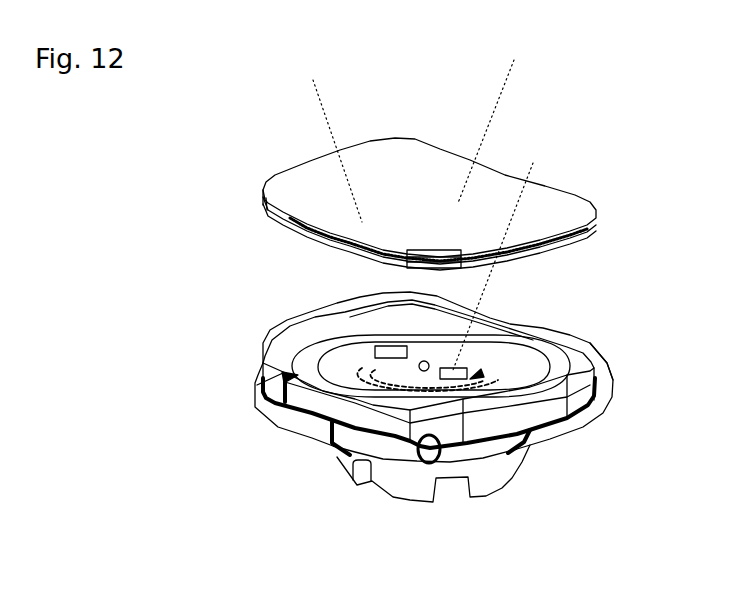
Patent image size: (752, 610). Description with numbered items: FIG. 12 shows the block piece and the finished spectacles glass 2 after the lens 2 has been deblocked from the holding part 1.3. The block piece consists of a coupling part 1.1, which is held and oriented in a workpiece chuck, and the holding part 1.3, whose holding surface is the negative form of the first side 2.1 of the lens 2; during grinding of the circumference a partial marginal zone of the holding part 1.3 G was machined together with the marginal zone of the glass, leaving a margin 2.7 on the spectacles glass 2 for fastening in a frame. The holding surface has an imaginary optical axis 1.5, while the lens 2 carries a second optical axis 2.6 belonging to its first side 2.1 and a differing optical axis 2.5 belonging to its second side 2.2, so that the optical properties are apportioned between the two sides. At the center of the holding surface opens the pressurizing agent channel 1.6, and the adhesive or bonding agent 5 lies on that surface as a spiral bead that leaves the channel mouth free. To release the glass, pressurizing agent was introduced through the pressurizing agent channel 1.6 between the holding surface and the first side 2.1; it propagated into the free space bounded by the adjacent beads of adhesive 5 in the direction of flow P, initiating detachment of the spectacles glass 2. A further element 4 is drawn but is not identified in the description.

The coupling part 1.1 is at (502, 468).
The holding part 1.3 is at (305, 430).
The holding part (ground) 1.3 G is at (256, 404).
The imaginary optical axis 1.5 is at (524, 190).
The pressurizing agent channel 1.6 is at (392, 345).
The lens 2 is at (578, 217).
The first side 2.1 is at (550, 264).
The second side 2.2 is at (495, 185).
The optical axis 2.5 is at (506, 79).
The second optical axis 2.6 is at (322, 106).
The margin 2.7 is at (262, 204).
The outer sealing ring 4 is at (358, 332).
The adhesive or bonding agent 5 is at (321, 348).
The direction of flow P is at (585, 351).